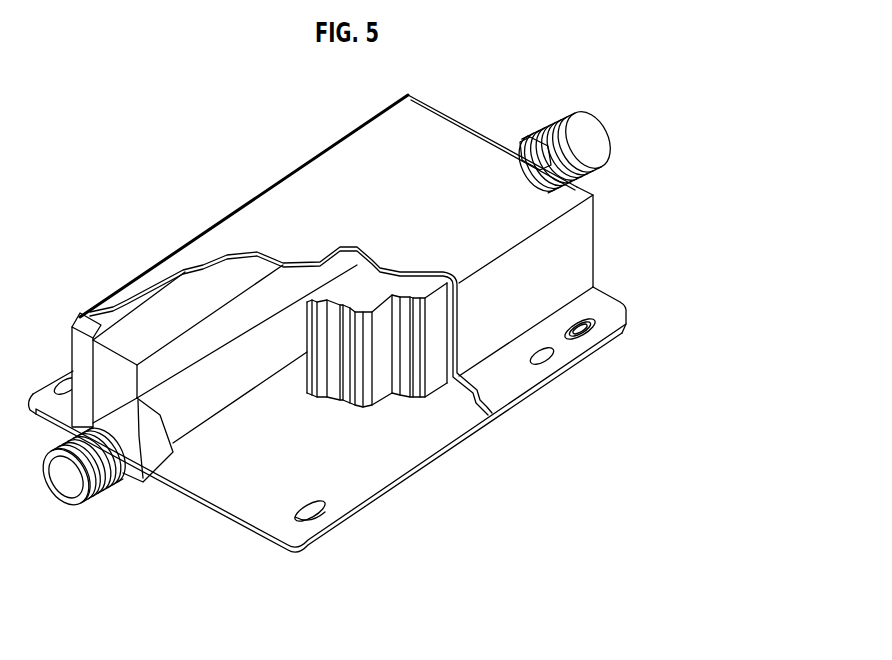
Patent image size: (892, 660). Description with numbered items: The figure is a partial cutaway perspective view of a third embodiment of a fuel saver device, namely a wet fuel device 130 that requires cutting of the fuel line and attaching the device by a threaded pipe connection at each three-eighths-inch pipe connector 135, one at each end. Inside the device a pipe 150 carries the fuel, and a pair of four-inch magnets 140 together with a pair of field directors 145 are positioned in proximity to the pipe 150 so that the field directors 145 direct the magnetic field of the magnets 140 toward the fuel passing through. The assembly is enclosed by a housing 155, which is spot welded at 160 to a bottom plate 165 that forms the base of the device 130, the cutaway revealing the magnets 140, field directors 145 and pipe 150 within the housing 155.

The fuel device 130 is at (692, 160).
The pipe connector 135 is at (600, 168).
The magnet 140 is at (140, 340).
The field director 145 is at (85, 322).
The pipe 150 is at (212, 383).
The housing 155 is at (500, 323).
The spot weld 160 is at (558, 360).
The bottom plate 165 is at (416, 447).